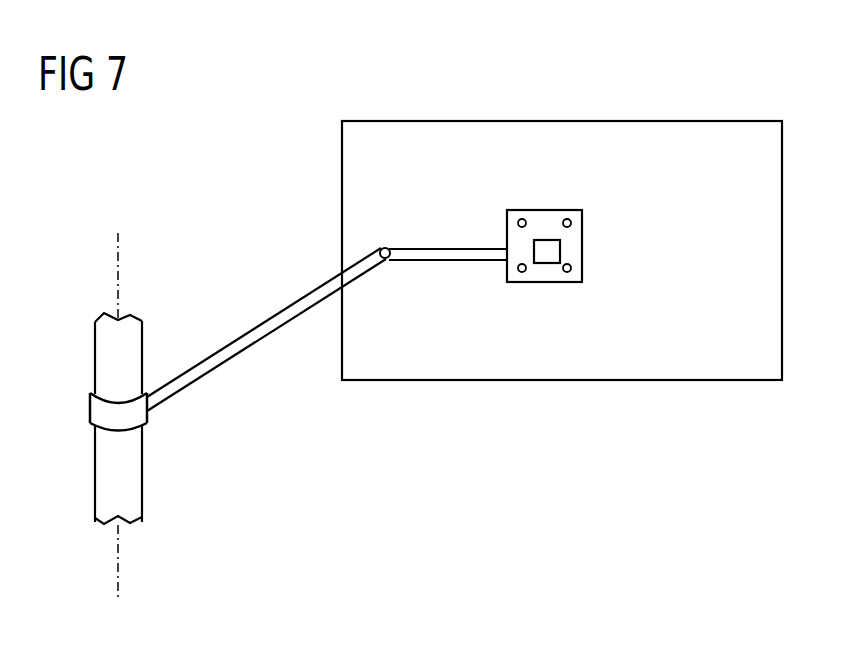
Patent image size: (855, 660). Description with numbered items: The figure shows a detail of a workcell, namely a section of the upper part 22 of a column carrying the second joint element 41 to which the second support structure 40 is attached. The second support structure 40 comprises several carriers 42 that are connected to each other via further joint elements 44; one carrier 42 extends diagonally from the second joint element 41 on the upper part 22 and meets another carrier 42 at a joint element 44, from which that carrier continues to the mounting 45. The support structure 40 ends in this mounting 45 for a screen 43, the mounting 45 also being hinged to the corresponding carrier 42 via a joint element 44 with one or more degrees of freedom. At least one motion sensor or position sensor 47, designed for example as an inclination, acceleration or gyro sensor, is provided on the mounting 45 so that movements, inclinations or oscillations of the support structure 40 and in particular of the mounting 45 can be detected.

The upper part of column 22 is at (145, 455).
The second support structure 40 is at (244, 262).
The second joint element 41 is at (91, 408).
The carrier 42 is at (268, 341).
The screen 43 is at (541, 121).
The joint element 44 is at (384, 247).
The mounting 45 is at (582, 247).
The motion sensor or position sensor 47 is at (548, 283).